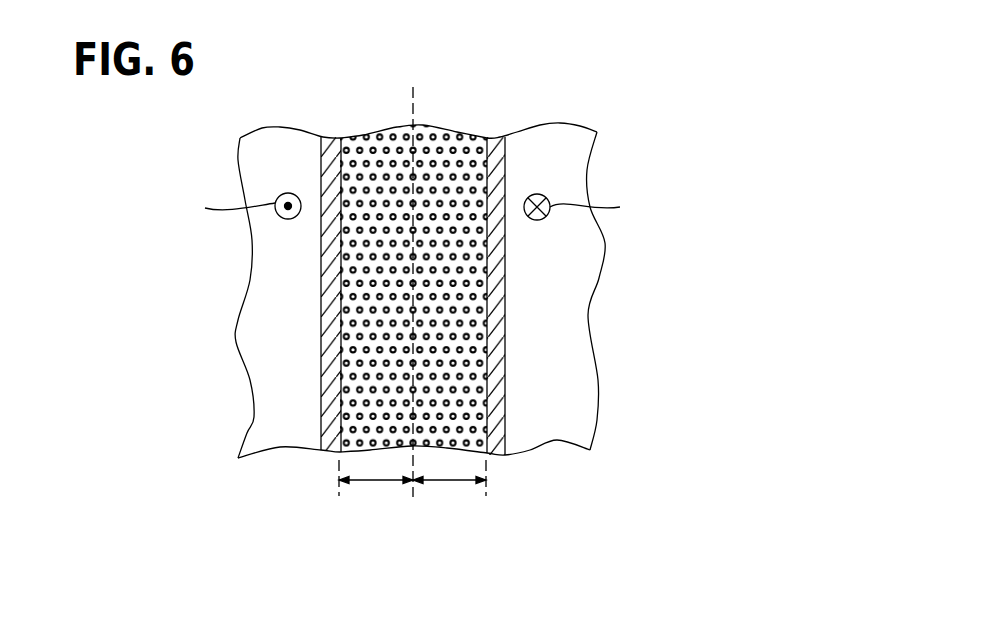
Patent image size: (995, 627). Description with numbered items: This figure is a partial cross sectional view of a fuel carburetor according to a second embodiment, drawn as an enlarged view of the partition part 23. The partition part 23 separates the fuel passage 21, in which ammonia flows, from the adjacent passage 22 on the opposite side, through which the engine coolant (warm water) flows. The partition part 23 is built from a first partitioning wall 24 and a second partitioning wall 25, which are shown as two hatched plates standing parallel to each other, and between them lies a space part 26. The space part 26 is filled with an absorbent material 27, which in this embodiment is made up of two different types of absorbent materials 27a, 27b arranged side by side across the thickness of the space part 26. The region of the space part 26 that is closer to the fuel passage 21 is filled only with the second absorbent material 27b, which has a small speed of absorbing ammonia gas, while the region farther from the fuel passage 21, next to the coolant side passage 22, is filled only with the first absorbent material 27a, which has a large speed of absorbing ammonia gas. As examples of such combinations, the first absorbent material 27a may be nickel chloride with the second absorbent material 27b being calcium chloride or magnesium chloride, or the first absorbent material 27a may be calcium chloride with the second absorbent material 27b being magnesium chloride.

The fuel passage 21 is at (275, 299).
The engine coolant passage 22 is at (543, 317).
The partition part 23 is at (346, 256).
The first partitioning wall 24 is at (333, 137).
The second partitioning wall 25 is at (493, 137).
The space part 26 is at (403, 330).
The absorbent material 27 is at (412, 520).
The first absorbent material 27a is at (449, 502).
The second absorbent material 27b is at (375, 485).